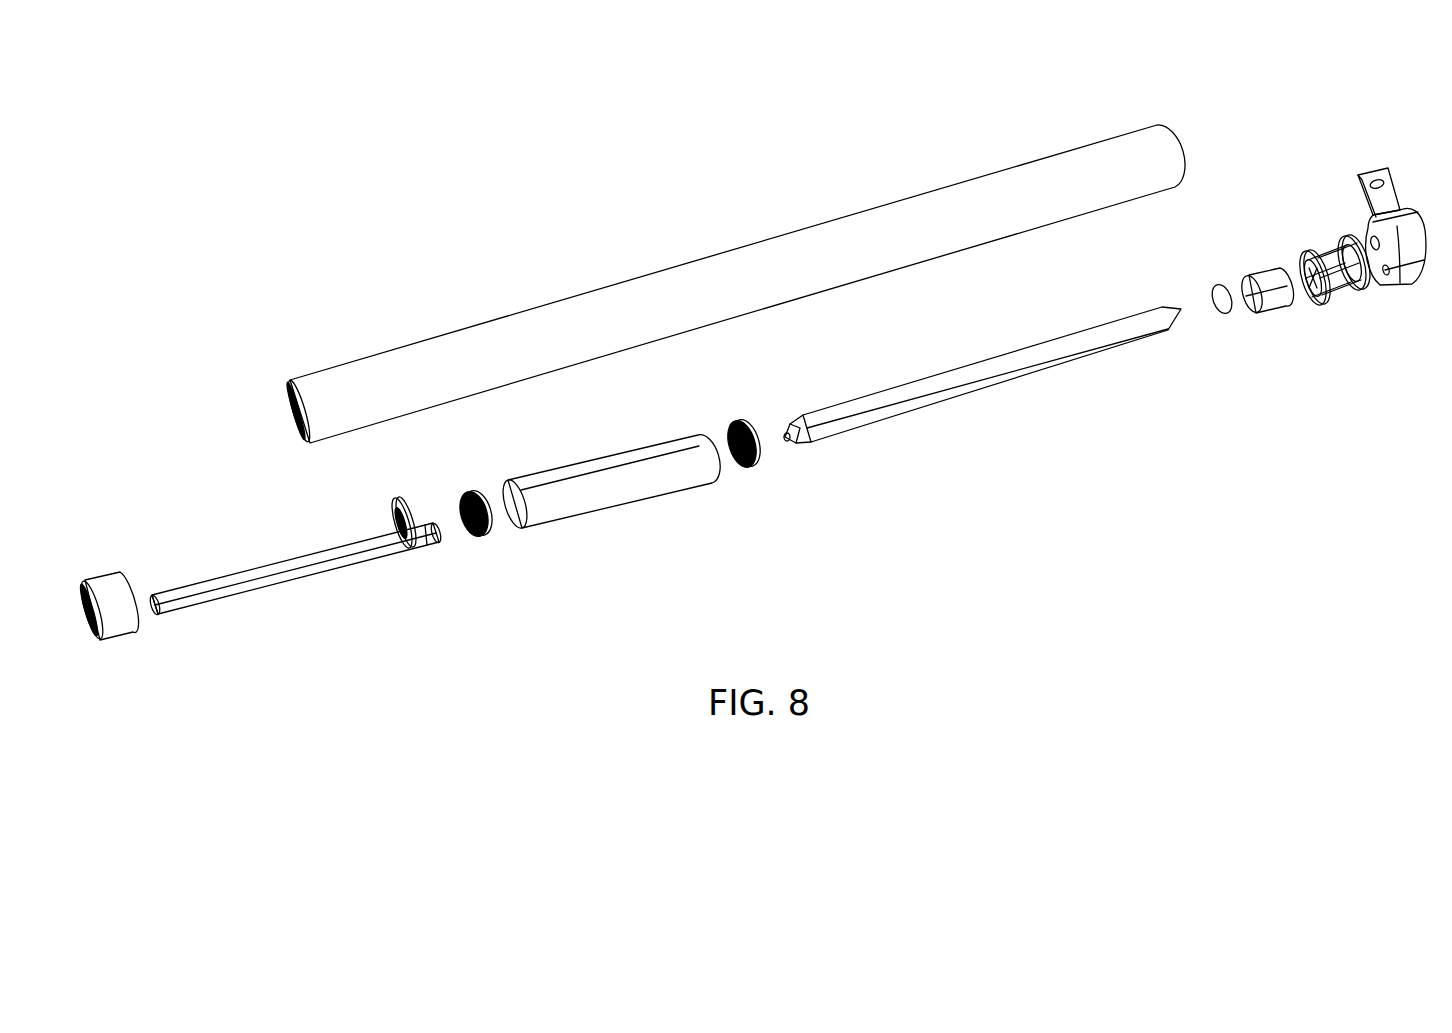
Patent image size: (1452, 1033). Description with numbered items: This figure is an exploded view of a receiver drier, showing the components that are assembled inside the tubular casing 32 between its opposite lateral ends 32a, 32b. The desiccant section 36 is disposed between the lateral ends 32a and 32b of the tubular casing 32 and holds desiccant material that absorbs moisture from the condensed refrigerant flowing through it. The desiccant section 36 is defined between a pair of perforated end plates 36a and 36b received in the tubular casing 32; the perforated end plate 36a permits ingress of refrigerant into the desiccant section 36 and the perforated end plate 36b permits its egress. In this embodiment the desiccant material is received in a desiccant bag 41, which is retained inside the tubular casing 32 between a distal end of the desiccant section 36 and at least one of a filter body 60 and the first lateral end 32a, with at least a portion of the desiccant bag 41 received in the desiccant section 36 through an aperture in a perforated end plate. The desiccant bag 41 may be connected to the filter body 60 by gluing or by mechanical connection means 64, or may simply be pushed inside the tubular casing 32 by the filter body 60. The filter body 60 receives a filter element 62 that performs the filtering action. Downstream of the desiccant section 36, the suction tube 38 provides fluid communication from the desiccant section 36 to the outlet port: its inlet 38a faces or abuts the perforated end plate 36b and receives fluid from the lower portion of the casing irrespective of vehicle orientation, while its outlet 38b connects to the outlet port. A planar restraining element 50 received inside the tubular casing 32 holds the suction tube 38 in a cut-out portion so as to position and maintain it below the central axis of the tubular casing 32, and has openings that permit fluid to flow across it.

The tubular casing 32 is at (650, 287).
The first lateral end 32a is at (1418, 265).
The lateral end 32b is at (118, 620).
The desiccant section 36 is at (588, 495).
The perforated end plate 36a is at (750, 467).
The perforated end plate 36b is at (477, 535).
The suction tube 38 is at (277, 575).
The inlet 38a is at (430, 545).
The outlet 38b is at (165, 612).
The desiccant bag 41 is at (1088, 350).
The restraining element 50 is at (395, 505).
The filter body 60 is at (1328, 257).
The filter element 62 is at (1275, 293).
The mechanical connection means 64 is at (1225, 310).